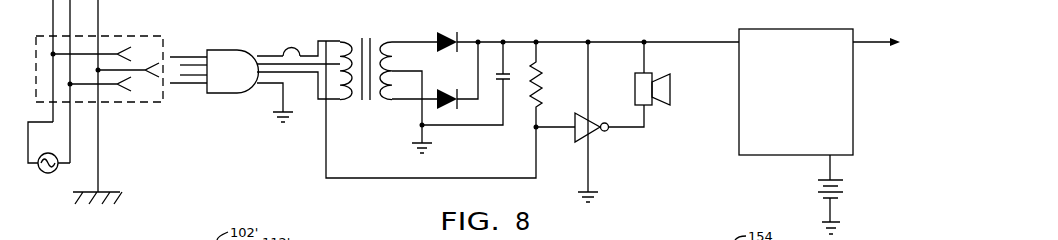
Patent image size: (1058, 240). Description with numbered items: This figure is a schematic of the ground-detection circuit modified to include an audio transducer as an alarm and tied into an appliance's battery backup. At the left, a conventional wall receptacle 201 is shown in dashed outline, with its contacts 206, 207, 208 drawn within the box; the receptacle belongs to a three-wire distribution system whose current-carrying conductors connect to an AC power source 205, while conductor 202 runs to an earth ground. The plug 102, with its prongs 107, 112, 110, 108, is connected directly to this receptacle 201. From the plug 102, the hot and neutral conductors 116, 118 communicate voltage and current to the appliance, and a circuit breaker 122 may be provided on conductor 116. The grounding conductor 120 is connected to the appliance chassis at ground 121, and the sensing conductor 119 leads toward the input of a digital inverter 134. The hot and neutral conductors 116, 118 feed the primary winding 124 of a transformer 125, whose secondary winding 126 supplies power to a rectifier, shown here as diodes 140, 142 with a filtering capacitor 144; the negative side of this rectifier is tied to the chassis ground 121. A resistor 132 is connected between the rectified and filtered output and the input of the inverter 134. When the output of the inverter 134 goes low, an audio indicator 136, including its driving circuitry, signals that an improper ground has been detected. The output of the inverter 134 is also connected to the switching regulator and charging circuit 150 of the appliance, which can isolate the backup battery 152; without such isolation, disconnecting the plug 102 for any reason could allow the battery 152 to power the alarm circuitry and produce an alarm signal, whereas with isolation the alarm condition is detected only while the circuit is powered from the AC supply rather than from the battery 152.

The plug 102 is at (230, 36).
The plug prong 107 is at (183, 56).
The plug prong 108 is at (183, 85).
The plug prong 110 is at (197, 78).
The plug prong 112 is at (190, 64).
The hot conductor 116 is at (262, 56).
The neutral conductor 118 is at (270, 85).
The sensing conductor 119 is at (318, 52).
The grounding conductor 120 is at (276, 113).
The ground 121 is at (279, 118).
The circuit breaker 122 is at (291, 46).
The primary winding 124 is at (362, 40).
The transformer 125 is at (371, 110).
The secondary winding 126 is at (391, 40).
The resistor 132 is at (544, 74).
The digital inverter 134 is at (596, 134).
The audio indicator 136 is at (652, 71).
The diode 140 is at (444, 31).
The diode 142 is at (442, 88).
The capacitor 144 is at (503, 82).
The switching regulator and charging circuit 150 is at (802, 28).
The battery 152 is at (845, 180).
The wall receptacle 201 is at (107, 29).
The conductor 202 is at (100, 162).
The AC power source 205 is at (48, 175).
The outlet contact 206 is at (113, 52).
The outlet contact 207 is at (108, 108).
The outlet contact 208 is at (147, 72).